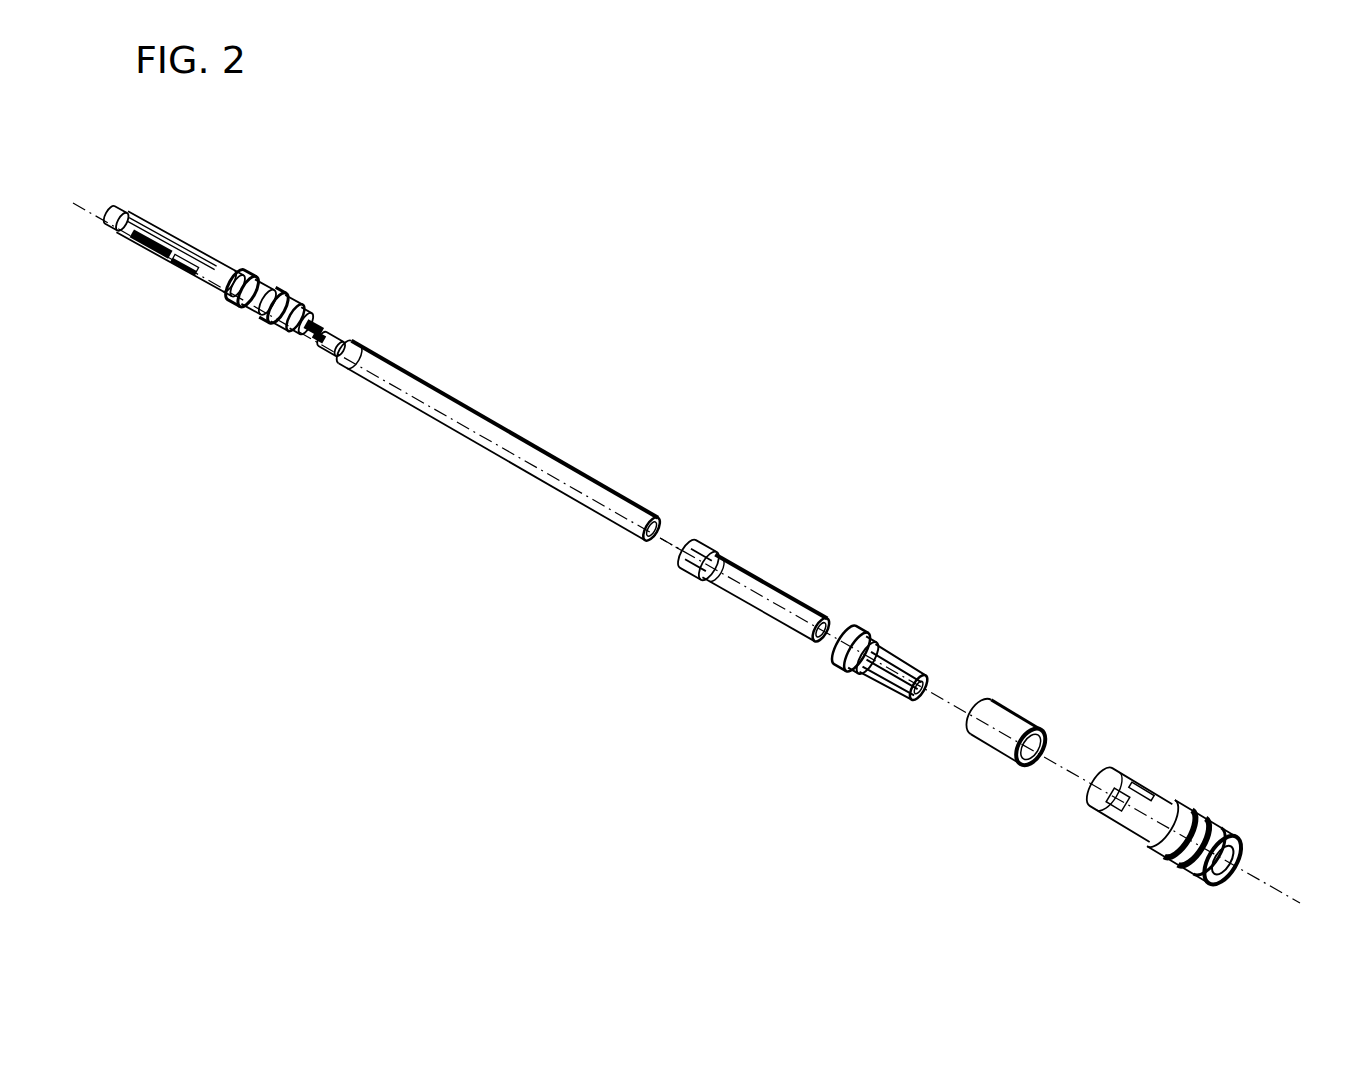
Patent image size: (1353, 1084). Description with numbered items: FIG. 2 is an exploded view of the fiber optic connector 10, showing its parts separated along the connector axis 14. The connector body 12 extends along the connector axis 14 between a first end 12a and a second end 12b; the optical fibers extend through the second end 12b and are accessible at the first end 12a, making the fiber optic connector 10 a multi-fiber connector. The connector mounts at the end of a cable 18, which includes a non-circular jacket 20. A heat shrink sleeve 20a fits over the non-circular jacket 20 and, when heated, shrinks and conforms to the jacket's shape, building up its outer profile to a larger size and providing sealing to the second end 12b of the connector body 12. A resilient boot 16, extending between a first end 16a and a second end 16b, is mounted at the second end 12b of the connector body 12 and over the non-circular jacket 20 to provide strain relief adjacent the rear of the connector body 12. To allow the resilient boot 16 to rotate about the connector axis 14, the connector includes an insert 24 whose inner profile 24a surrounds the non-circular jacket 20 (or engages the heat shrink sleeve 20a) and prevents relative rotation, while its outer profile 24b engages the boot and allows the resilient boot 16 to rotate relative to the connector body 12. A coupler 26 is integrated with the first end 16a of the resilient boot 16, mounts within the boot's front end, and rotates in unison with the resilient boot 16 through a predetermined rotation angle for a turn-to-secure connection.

The fiber optic connector 10 is at (513, 773).
The connector body 12 is at (237, 265).
The first end 12a is at (118, 208).
The second end 12b is at (305, 305).
The connector axis 14 is at (665, 542).
The resilient boot 16 is at (1170, 795).
The first end 16a is at (1088, 807).
The second end 16b is at (1210, 883).
The cable 18 is at (404, 489).
The non-circular jacket 20 is at (565, 450).
The heat shrink sleeve 20a is at (740, 550).
The insert 24 is at (1028, 720).
The inner profile 24a is at (1025, 767).
The outer profile 24b is at (992, 730).
The coupler 26 is at (887, 647).